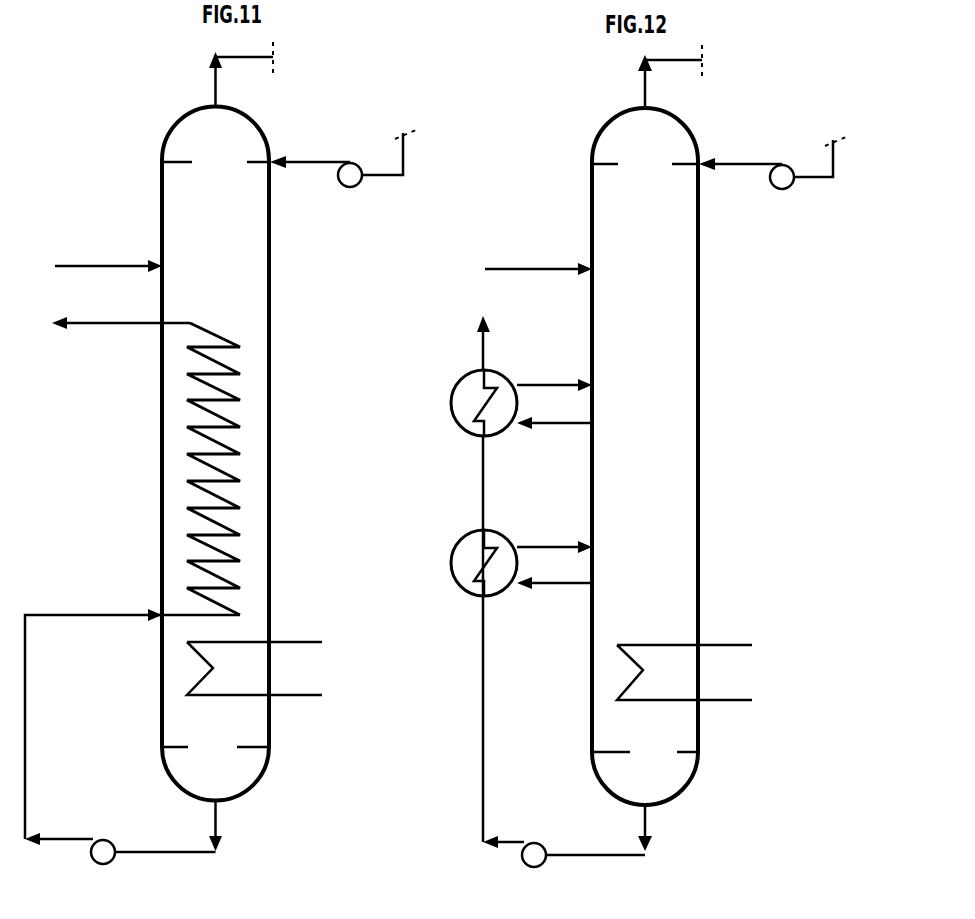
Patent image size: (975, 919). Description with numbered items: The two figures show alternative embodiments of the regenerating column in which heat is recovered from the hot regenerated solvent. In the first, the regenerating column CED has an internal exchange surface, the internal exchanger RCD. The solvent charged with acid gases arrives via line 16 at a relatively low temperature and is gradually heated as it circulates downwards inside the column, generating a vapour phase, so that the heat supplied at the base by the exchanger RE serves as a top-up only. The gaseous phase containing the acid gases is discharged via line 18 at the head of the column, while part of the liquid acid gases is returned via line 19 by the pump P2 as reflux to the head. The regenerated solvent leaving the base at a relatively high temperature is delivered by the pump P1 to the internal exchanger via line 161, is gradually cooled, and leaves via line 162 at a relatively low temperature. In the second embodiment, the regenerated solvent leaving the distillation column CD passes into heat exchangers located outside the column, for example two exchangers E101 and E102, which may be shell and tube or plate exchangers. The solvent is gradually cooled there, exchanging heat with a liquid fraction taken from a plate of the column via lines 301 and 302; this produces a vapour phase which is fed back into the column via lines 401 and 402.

In FIG. 11, the line 16 is at (105, 266).
In FIG. 12, the line 16 is at (545, 269).
In FIG. 11, the line 18 is at (216, 84).
In FIG. 12, the line 18 is at (645, 85).
In FIG. 11, the line 19 is at (396, 178).
In FIG. 12, the line 19 is at (825, 180).
In FIG. 11, the line 161 is at (90, 612).
In FIG. 12, the line 161 is at (480, 674).
In FIG. 11, the line 162 is at (90, 324).
In FIG. 12, the line 162 is at (483, 352).
In FIG. 12, the line 301 is at (548, 587).
In FIG. 12, the line 302 is at (545, 426).
In FIG. 12, the line 401 is at (548, 545).
In FIG. 12, the line 402 is at (548, 383).
In FIG. 11, the pump P1 is at (123, 832).
In FIG. 12, the pump P1 is at (567, 836).
In FIG. 11, the pump P2 is at (343, 158).
In FIG. 12, the pump P2 is at (772, 161).
In FIG. 11, the reboiler RE is at (254, 654).
In FIG. 12, the reboiler RE is at (684, 657).
In FIG. 11, the internal exchanger RCD is at (233, 368).
In FIG. 11, the regenerating column CED is at (278, 466).
In FIG. 12, the distillation column CD is at (706, 466).
In FIG. 12, the heat exchanger E101 is at (458, 563).
In FIG. 12, the heat exchanger E102 is at (458, 403).